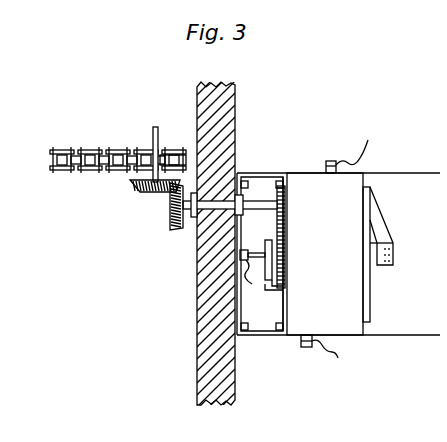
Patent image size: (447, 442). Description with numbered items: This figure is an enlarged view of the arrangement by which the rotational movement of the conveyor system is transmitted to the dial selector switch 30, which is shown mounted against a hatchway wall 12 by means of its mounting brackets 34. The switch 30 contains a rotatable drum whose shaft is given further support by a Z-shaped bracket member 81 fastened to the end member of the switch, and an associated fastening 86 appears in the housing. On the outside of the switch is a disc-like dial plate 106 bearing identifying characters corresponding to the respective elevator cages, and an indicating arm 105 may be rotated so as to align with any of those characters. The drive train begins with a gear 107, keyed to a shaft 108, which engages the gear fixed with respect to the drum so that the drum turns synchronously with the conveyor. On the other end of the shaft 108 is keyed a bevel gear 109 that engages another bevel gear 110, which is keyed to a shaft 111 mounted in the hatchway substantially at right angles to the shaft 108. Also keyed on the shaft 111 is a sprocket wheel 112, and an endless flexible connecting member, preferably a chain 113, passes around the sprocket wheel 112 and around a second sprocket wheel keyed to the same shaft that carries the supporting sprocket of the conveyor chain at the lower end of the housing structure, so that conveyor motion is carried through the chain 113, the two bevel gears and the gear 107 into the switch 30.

The wall 12 is at (237, 120).
The dial selector switch 30 is at (301, 262).
The brackets 34 is at (266, 172).
The Z-shaped bracket member 81 is at (265, 289).
The bolt 86 is at (272, 286).
The indicating arm 105 is at (392, 240).
The disc-like plate 106 is at (371, 186).
The gear 107 is at (277, 197).
The shaft 108 is at (268, 210).
The bevel gear 109 is at (178, 232).
The bevel gear 110 is at (152, 196).
The shaft 111 is at (153, 138).
The sprocket wheel 112 is at (192, 156).
The chain 113 is at (90, 148).